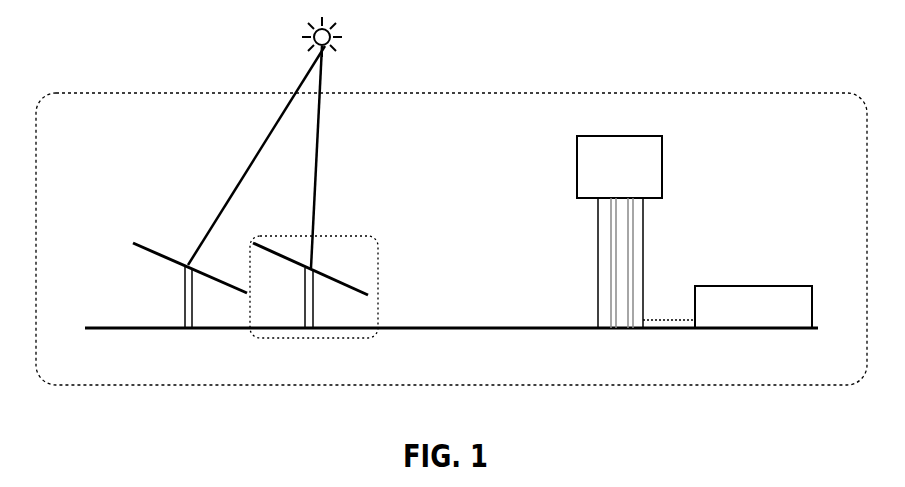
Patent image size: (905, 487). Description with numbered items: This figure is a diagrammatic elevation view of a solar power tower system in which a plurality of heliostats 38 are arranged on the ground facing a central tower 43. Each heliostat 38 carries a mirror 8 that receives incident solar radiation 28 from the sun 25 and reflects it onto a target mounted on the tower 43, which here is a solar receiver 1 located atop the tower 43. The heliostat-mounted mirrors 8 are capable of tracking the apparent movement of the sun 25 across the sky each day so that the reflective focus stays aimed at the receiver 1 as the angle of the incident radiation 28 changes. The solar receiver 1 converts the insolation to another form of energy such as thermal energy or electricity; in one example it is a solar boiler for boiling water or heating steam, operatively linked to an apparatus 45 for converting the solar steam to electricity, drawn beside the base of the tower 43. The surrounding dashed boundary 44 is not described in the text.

The solar receiver 1 is at (662, 168).
The mirror 8 is at (157, 256).
The sun 25 is at (345, 46).
The incident solar radiation 28 is at (280, 115).
The heliostat 38 is at (292, 318).
The tower 43 is at (645, 233).
The system enclosure 44 is at (173, 379).
The apparatus for converting solar steam to electricity 45 is at (792, 319).